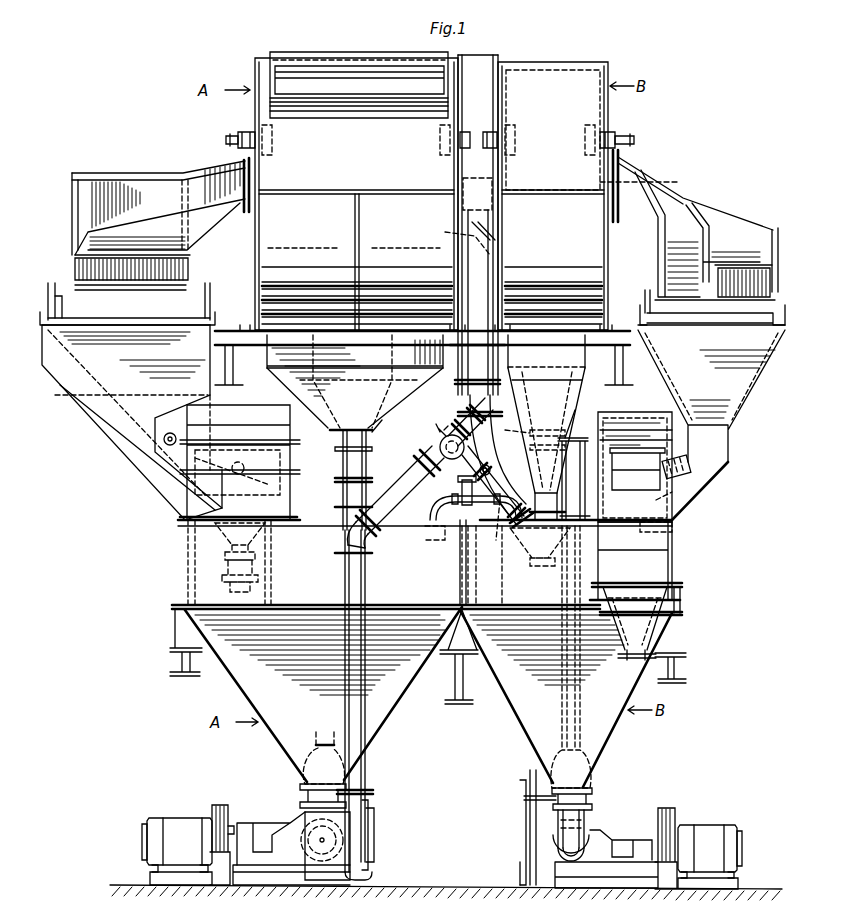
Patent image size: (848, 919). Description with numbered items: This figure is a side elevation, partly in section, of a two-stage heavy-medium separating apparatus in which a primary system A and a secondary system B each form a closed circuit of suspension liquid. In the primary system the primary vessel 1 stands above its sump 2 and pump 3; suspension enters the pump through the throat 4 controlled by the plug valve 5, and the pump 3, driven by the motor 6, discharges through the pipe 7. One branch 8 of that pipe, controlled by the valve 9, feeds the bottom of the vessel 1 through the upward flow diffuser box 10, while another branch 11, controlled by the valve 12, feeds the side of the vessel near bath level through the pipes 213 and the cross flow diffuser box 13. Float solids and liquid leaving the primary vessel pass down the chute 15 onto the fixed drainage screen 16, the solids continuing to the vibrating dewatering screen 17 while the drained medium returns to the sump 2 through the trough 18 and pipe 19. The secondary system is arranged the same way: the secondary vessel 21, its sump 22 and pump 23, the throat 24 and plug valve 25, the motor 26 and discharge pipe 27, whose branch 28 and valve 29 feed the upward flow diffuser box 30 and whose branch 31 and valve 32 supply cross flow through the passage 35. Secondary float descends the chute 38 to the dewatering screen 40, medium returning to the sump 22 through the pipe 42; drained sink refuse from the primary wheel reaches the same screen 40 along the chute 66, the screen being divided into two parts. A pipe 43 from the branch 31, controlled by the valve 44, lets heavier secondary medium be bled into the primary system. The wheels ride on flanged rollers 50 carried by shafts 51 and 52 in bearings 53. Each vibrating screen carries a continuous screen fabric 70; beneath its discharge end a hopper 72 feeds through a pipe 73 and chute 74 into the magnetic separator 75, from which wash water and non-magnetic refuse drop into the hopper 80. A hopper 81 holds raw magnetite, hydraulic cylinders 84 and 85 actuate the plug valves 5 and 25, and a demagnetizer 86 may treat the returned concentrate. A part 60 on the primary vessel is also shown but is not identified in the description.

The primary vessel 1 is at (272, 256).
The sump 2 is at (385, 700).
The pump 3 is at (348, 839).
The throat 4 is at (306, 798).
The plug valve 5 is at (312, 764).
The motor 6 is at (180, 828).
The pipe 7 is at (358, 640).
The branch 8 is at (360, 492).
The valve 9 is at (372, 446).
The upward flow diffuser box 10 is at (415, 386).
The branch 11 is at (390, 498).
The valve 12 is at (442, 444).
The cross flow diffuser box 13 is at (465, 186).
The chute 15 is at (200, 220).
The fixed drainage screen 16 is at (80, 263).
The vibrating mechanical dewatering screen 17 is at (208, 294).
The trough 18 is at (85, 355).
The pipe 19 is at (168, 482).
The secondary vessel 21 is at (598, 268).
The sump 22 is at (525, 712).
The pump 23 is at (585, 838).
The throat 24 is at (586, 802).
The plug valve 25 is at (590, 762).
The motor 26 is at (702, 830).
The pipe 27 is at (537, 778).
The branch 28 is at (534, 478).
The valve 29 is at (512, 426).
The upward flow diffuser box 30 is at (580, 396).
The branch 31 is at (490, 452).
The valve 32 is at (480, 472).
The passage 35 is at (445, 232).
The chute 38 is at (614, 224).
The mechanical dewatering vibrating screen 40 is at (645, 296).
The pipe 42 is at (690, 500).
The pipe 43 is at (478, 518).
The valve 44 is at (460, 492).
The flanged rollers 50 is at (274, 132).
The shaft 51 is at (230, 136).
The shaft 52 is at (636, 140).
The bearings 53 is at (246, 130).
The top cover 60 is at (322, 60).
The chute 66 is at (680, 245).
The continuous screen fabric 70 is at (52, 296).
The hopper 72 is at (752, 392).
The pipe 73 is at (716, 457).
The chute 74 is at (628, 450).
The magnetic separator 75 is at (238, 412).
The hopper 80 is at (666, 637).
The hopper for raw magnetite 81 is at (384, 428).
The hydraulic cylinder 84 is at (312, 430).
The hydraulic cylinder 85 is at (572, 441).
The demagnetizer 86 is at (186, 567).
The pipes 213 is at (470, 394).